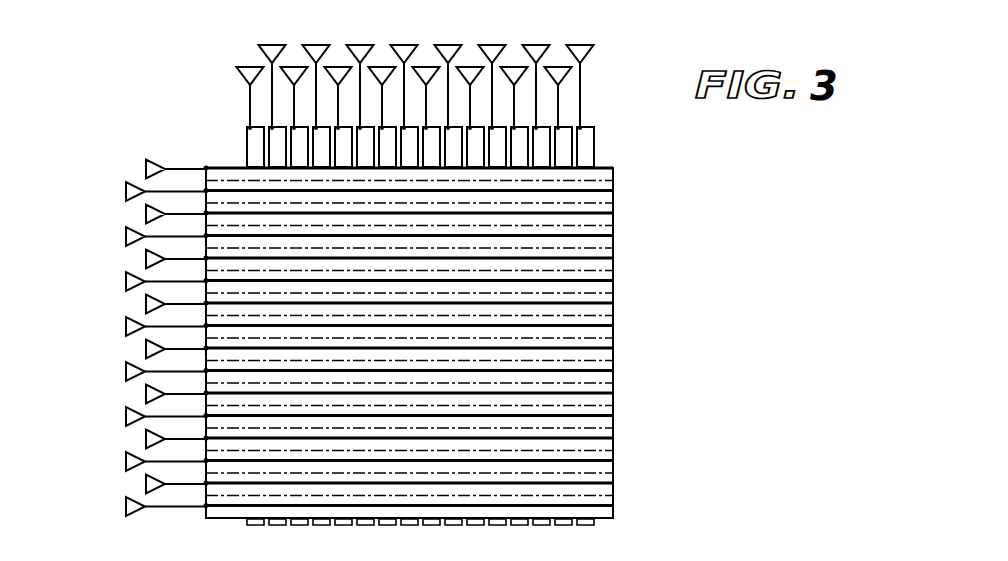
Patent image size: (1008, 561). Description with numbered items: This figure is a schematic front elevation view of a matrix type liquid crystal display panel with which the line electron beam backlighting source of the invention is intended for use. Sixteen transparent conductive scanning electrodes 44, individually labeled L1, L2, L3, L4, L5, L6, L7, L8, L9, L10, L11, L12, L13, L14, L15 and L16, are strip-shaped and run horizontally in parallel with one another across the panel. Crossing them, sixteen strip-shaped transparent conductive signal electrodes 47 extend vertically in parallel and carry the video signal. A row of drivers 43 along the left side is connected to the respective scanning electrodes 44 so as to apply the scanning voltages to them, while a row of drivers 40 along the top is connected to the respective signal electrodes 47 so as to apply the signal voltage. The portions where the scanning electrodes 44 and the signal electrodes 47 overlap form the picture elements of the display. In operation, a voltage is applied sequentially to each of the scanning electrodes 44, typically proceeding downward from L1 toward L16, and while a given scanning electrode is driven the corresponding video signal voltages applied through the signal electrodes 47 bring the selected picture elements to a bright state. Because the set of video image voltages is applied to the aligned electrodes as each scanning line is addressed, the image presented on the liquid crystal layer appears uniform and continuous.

The drivers 40 is at (240, 66).
The drivers 43 is at (157, 158).
The transparent conductive scanning electrodes 44 is at (683, 146).
The transparent conductive signal electrodes 47 is at (247, 150).
The scanning electrode L1 is at (613, 174).
The scanning electrode L2 is at (613, 196).
The scanning electrode L3 is at (613, 219).
The scanning electrode L4 is at (613, 242).
The scanning electrode L5 is at (613, 264).
The scanning electrode L6 is at (613, 286).
The scanning electrode L7 is at (613, 309).
The scanning electrode L8 is at (613, 332).
The scanning electrode L9 is at (613, 354).
The scanning electrode L10 is at (613, 376).
The scanning electrode L11 is at (613, 399).
The scanning electrode L12 is at (613, 422).
The scanning electrode L13 is at (613, 444).
The scanning electrode L14 is at (613, 466).
The scanning electrode L15 is at (613, 489).
The scanning electrode L16 is at (613, 512).